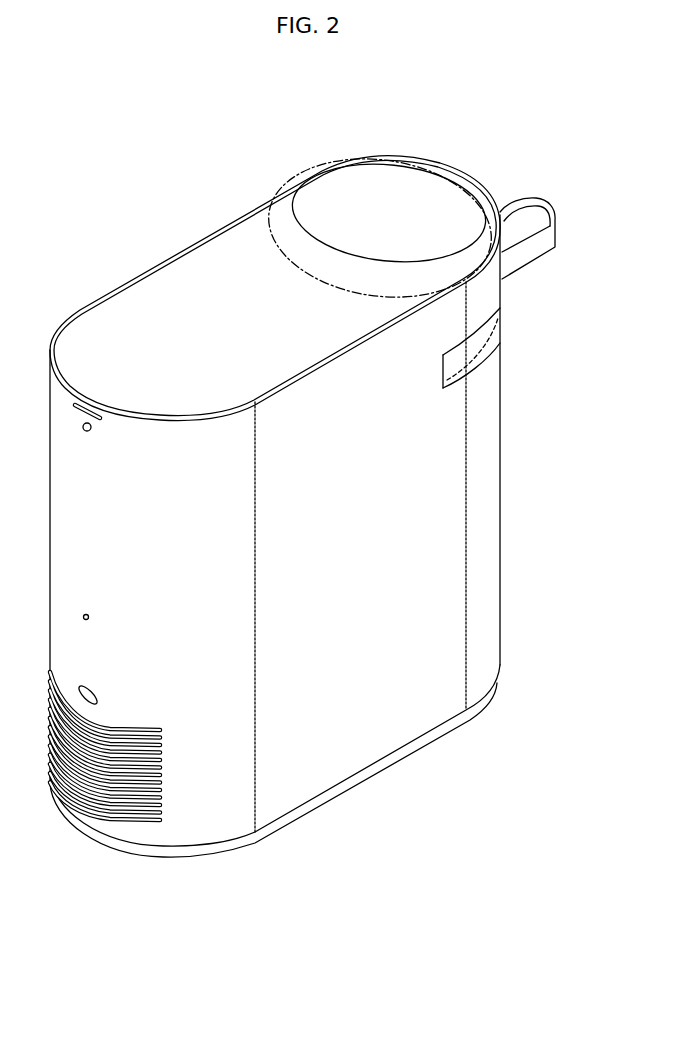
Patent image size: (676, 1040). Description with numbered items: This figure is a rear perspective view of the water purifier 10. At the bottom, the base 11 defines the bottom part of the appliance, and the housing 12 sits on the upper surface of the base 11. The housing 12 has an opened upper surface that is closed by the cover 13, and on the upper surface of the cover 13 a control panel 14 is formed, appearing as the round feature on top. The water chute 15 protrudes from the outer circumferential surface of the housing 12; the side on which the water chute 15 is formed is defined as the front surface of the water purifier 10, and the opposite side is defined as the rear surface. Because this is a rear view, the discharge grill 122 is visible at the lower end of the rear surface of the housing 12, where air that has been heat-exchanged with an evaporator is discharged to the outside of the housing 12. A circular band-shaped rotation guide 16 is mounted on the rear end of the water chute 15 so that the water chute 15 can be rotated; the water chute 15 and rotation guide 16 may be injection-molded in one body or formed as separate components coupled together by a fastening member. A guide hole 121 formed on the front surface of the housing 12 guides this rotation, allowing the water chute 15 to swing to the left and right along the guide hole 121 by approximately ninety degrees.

The water purifier 10 is at (248, 142).
The base 11 is at (352, 782).
The housing 12 is at (455, 527).
The guide hole 121 is at (503, 343).
The discharge grill 122 is at (143, 790).
The cover 13 is at (178, 290).
The control panel 14 is at (380, 182).
The water chute 15 is at (520, 206).
The rotation guide 16 is at (492, 325).